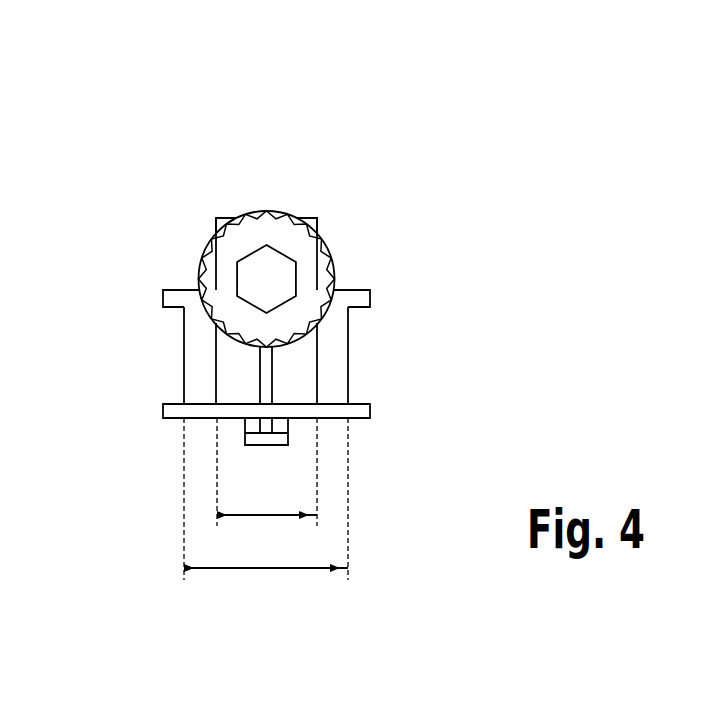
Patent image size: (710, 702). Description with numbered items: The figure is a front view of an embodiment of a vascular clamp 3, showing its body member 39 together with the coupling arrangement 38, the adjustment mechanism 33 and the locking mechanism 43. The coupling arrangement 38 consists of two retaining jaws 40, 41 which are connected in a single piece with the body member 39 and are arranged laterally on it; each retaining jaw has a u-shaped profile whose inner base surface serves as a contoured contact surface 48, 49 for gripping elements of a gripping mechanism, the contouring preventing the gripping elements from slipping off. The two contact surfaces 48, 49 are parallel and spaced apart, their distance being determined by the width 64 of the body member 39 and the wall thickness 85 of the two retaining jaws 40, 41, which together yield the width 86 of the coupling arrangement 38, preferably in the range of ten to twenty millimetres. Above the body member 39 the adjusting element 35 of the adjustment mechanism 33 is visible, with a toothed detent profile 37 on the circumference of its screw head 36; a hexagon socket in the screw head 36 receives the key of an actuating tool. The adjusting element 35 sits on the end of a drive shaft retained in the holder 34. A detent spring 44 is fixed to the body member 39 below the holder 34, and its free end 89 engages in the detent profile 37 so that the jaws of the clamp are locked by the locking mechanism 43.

The vascular clamp 3 is at (350, 134).
The adjustment mechanism 33 is at (183, 218).
The holder 34 is at (307, 406).
The adjusting element 35 is at (245, 232).
The screw head 36 is at (336, 257).
The toothed detent profile 37 is at (281, 215).
The coupling arrangement 38 is at (442, 300).
The body member 39 is at (228, 440).
The retaining jaw 40 is at (196, 300).
The retaining jaw 41 is at (342, 300).
The locking mechanism 43 is at (300, 440).
The detent spring 44 is at (270, 388).
The contact surface 48 is at (184, 330).
The contact surface 49 is at (350, 328).
The width of body member 64 is at (272, 518).
The wall thickness 85 is at (190, 368).
The width of coupling arrangement 86 is at (237, 571).
The free end of detent spring 89 is at (265, 358).